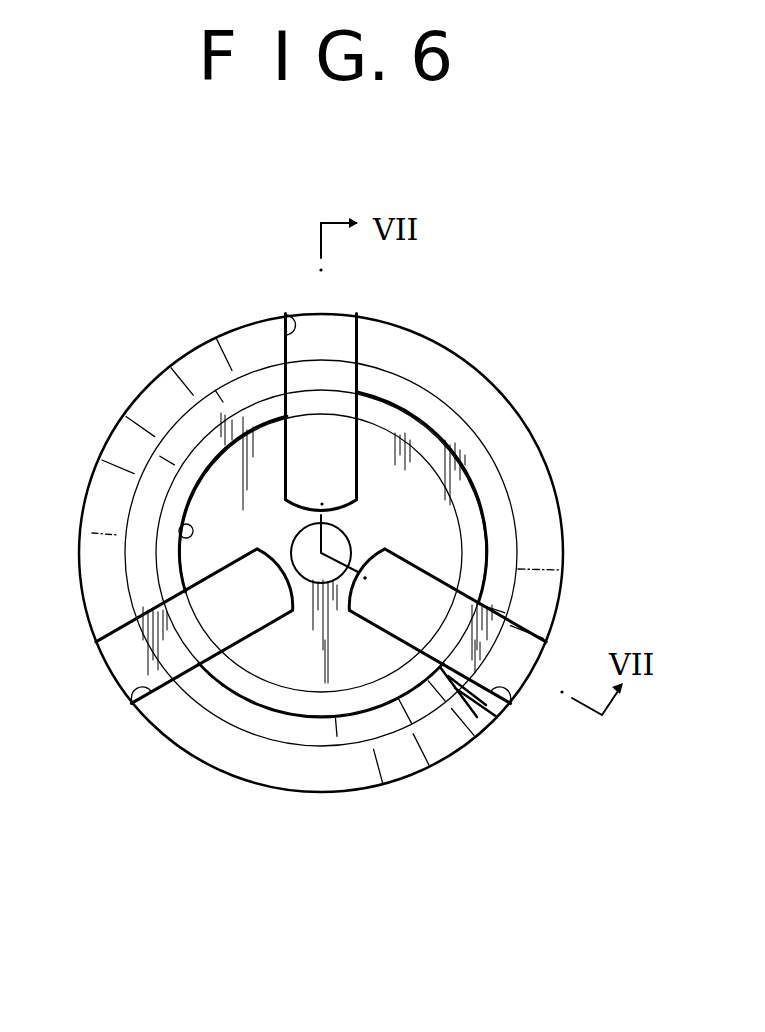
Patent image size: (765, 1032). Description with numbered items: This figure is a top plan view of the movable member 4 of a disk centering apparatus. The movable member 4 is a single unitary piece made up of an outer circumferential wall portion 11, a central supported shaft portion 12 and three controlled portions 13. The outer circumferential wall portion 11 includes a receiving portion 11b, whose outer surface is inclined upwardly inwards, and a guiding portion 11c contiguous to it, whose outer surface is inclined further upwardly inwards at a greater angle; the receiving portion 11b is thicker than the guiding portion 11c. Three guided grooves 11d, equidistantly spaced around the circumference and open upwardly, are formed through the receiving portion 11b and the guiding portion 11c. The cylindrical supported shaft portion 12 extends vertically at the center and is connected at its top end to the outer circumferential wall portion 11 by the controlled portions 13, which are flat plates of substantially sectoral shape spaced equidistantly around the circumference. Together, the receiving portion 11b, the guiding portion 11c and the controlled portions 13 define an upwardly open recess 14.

The movable member 4 is at (530, 315).
The outer circumferential wall portion 11 is at (562, 520).
The receiving portion 11b is at (547, 580).
The guiding portion 11c is at (470, 440).
The guided grooves 11d is at (293, 316).
The supported shaft portion 12 is at (257, 567).
The controlled portions 13 is at (213, 467).
The recess 14 is at (179, 527).